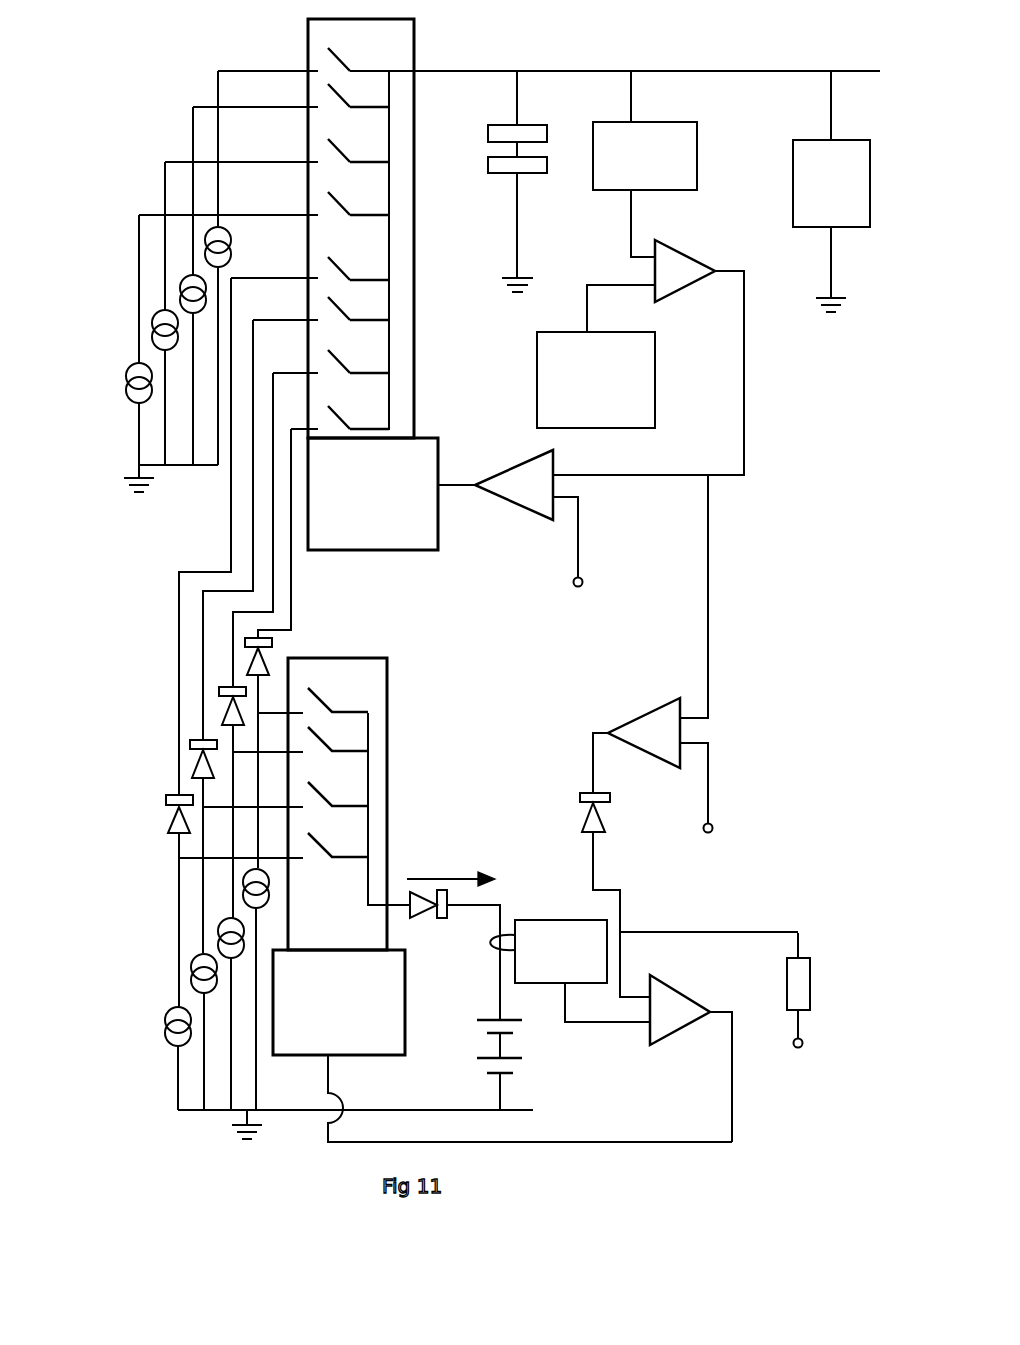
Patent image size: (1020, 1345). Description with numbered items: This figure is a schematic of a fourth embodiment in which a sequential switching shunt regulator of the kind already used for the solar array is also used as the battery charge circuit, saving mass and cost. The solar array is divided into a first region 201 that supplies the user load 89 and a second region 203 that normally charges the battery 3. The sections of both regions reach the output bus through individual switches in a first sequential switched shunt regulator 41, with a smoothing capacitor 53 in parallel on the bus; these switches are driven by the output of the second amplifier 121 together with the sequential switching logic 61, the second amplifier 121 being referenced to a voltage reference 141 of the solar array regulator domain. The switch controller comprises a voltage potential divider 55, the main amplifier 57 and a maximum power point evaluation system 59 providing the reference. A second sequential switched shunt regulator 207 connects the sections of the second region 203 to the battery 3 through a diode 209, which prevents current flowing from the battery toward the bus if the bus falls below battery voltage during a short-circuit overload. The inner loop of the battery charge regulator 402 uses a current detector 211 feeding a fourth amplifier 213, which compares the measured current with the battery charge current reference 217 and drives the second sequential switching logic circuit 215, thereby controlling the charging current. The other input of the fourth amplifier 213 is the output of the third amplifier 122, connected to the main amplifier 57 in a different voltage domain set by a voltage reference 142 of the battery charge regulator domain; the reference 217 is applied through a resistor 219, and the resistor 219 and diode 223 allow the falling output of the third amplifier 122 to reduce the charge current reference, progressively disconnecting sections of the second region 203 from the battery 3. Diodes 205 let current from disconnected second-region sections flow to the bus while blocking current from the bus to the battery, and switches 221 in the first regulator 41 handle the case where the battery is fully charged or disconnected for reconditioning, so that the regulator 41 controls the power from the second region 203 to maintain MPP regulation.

The first region 201 is at (150, 192).
The first sequential switched shunt regulator 41 is at (398, 175).
The switches 221 is at (337, 283).
The sequential switching logic circuit 61 is at (380, 517).
The smoothing capacitor 53 is at (514, 166).
The voltage potential divider 55 is at (687, 171).
The user load 89 is at (817, 215).
The main amplifier 57 is at (663, 285).
The maximum power point evaluation system 59 is at (620, 398).
The second amplifier 121 is at (525, 467).
The voltage reference SA regulator domain 141 is at (592, 598).
The third amplifier 122 is at (660, 720).
The voltage reference battery charge regulator domain 142 is at (777, 793).
The diode 223 is at (613, 815).
The diodes 205 is at (170, 803).
The second region 203 is at (165, 922).
The second sequential switched shunt regulator 207 is at (327, 683).
The second sequential switching logic circuit 215 is at (365, 1032).
The diode 209 is at (430, 918).
The current detector 211 is at (562, 927).
The battery 3 is at (527, 1047).
The fourth amplifier 213 is at (663, 1025).
The resistor 219 is at (800, 978).
The battery charge current reference 217 is at (847, 1088).
The battery charge regulator 402 is at (625, 1058).